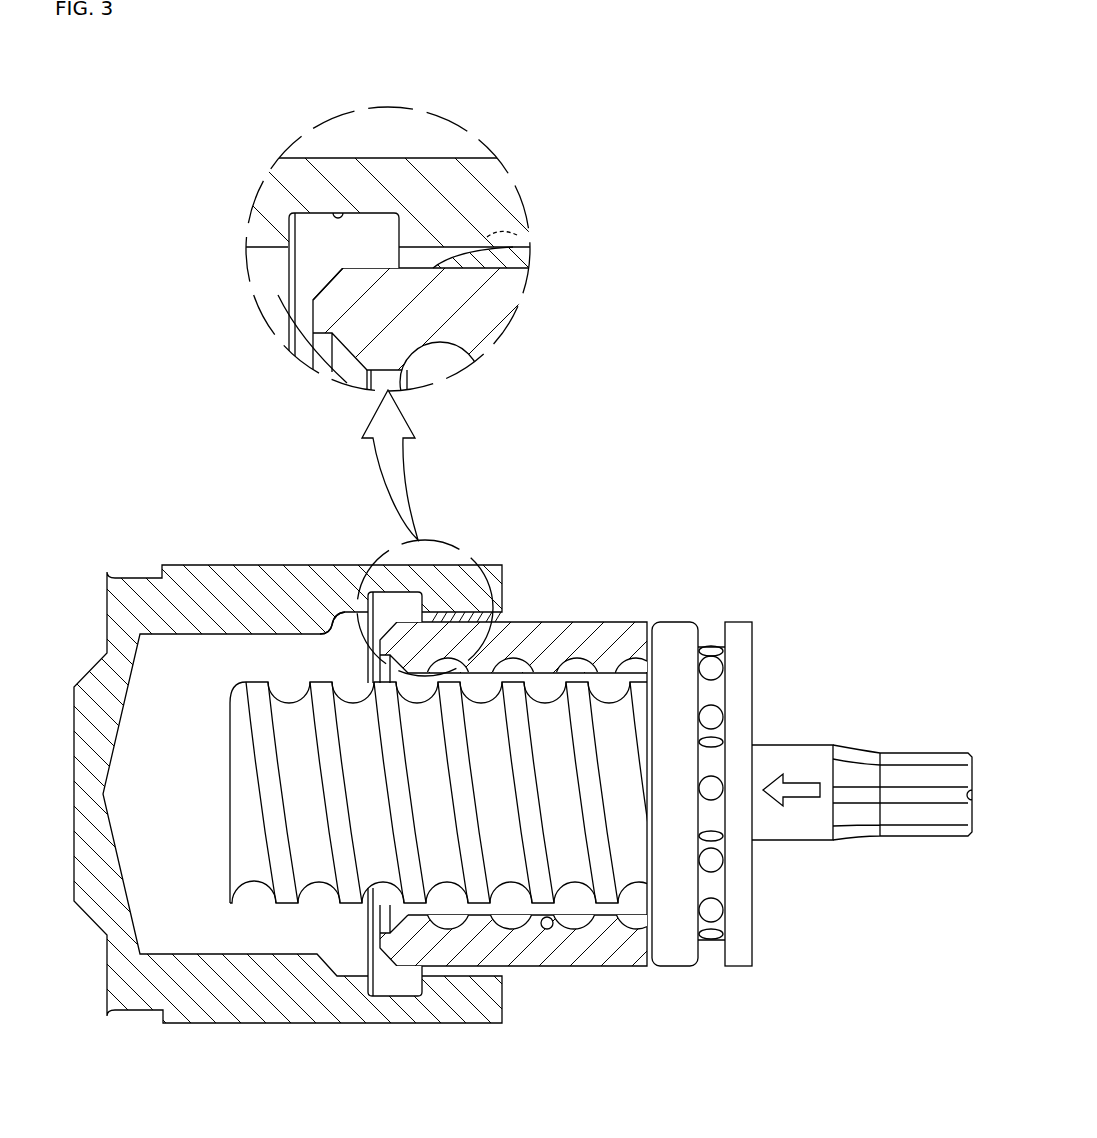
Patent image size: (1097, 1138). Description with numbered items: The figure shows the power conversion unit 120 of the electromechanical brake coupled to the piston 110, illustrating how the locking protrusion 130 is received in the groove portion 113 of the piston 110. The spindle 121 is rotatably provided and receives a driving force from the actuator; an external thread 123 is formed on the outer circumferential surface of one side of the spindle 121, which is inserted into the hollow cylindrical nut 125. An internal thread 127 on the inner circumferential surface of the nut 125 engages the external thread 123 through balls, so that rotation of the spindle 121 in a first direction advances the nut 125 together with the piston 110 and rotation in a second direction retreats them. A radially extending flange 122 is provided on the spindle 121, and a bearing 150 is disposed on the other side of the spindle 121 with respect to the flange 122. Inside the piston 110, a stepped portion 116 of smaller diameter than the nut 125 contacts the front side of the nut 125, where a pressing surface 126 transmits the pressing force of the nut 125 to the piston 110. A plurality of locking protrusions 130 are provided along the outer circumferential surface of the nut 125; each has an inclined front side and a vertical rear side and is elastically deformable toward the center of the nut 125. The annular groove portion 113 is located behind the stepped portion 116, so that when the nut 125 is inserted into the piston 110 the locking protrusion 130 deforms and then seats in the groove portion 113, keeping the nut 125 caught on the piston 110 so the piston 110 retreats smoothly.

The piston 110 is at (198, 577).
The groove portion 113 is at (345, 213).
The stepped portion 116 is at (340, 612).
The power conversion unit 120 is at (509, 643).
The spindle 121 is at (622, 733).
The flange 122 is at (668, 630).
The external thread 123 is at (284, 893).
The nut 125 is at (527, 628).
The pressing surface 126 is at (330, 282).
The internal thread 127 is at (548, 931).
The locking protrusion 130 is at (513, 258).
The bearing 150 is at (733, 630).